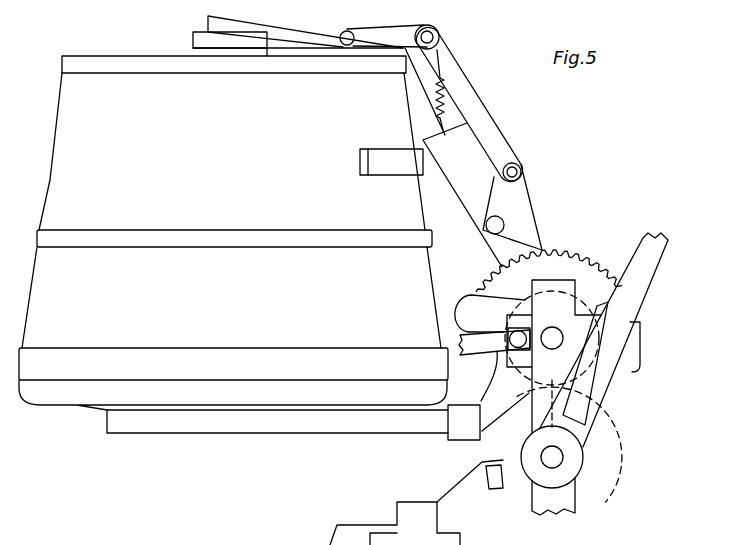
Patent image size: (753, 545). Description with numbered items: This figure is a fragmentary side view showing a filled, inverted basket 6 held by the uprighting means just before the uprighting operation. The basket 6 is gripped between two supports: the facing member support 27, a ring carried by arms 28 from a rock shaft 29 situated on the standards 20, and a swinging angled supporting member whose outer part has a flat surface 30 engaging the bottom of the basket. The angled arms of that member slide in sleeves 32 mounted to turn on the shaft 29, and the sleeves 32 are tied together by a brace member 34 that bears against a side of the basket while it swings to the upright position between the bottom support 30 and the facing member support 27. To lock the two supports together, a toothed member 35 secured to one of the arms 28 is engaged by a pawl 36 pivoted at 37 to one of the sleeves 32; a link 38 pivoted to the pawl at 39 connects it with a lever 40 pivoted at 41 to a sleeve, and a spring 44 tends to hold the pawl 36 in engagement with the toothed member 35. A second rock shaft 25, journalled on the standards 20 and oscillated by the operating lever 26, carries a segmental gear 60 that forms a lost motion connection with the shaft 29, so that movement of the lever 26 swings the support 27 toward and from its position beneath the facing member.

The basket 6 is at (63, 165).
The standards 20 is at (560, 503).
The rock shaft 25 is at (563, 457).
The operating lever 26 is at (607, 381).
The support 27 is at (343, 428).
The arms 28 is at (503, 394).
The rock shaft 29 is at (563, 340).
The flat surface 30 is at (260, 55).
The sleeves 32 is at (470, 185).
The brace member 34 is at (376, 150).
The toothed member 35 is at (590, 262).
The pawl 36 is at (526, 197).
The pivot 37 is at (492, 235).
The link 38 is at (492, 128).
The pivot 39 is at (517, 164).
The lever 40 is at (384, 30).
The pivot 41 is at (347, 31).
The spring 44 is at (443, 80).
The segmental gear 60 is at (614, 484).